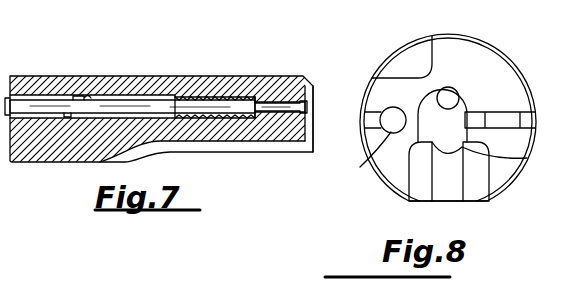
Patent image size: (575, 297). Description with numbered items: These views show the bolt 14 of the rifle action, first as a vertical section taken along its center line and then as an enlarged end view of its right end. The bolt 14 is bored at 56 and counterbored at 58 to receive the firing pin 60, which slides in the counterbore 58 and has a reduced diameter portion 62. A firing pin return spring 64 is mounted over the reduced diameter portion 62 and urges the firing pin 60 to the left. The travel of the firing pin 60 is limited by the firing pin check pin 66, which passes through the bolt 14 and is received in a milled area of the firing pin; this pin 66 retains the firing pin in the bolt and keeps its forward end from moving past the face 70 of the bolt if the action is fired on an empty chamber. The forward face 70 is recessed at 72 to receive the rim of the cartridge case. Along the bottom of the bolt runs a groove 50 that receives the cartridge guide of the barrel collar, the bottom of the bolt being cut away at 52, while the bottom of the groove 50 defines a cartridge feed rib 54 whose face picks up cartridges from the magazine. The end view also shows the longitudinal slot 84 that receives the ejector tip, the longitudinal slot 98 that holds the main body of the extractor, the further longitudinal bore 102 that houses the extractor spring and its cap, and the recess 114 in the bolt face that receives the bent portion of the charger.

In FIG. 7, the bolt 14 is at (182, 75).
In FIG. 7, the groove 50 is at (279, 146).
In FIG. 8, the groove 50 is at (457, 190).
In FIG. 7, the cut away 52 is at (193, 153).
In FIG. 8, the cut away 52 is at (422, 203).
In FIG. 8, the cartridge feed rib 54 is at (527, 158).
In FIG. 7, the bore 56 is at (288, 95).
In FIG. 7, the counterbore 58 is at (67, 119).
In FIG. 7, the firing pin 60 is at (35, 98).
In FIG. 7, the reduced diameter portion 62 is at (243, 121).
In FIG. 7, the firing pin return spring 64 is at (246, 90).
In FIG. 7, the firing pin check pin 66 is at (90, 93).
In FIG. 7, the face of the bolt 70 is at (313, 86).
In FIG. 8, the face of the bolt 70 is at (478, 63).
In FIG. 7, the recess 72 is at (312, 130).
In FIG. 8, the recess 72 is at (458, 100).
In FIG. 8, the longitudinal slot 84 is at (515, 110).
In FIG. 8, the longitudinal slot 98 is at (364, 118).
In FIG. 8, the longitudinal bore 102 is at (360, 167).
In FIG. 8, the recess 114 is at (410, 50).